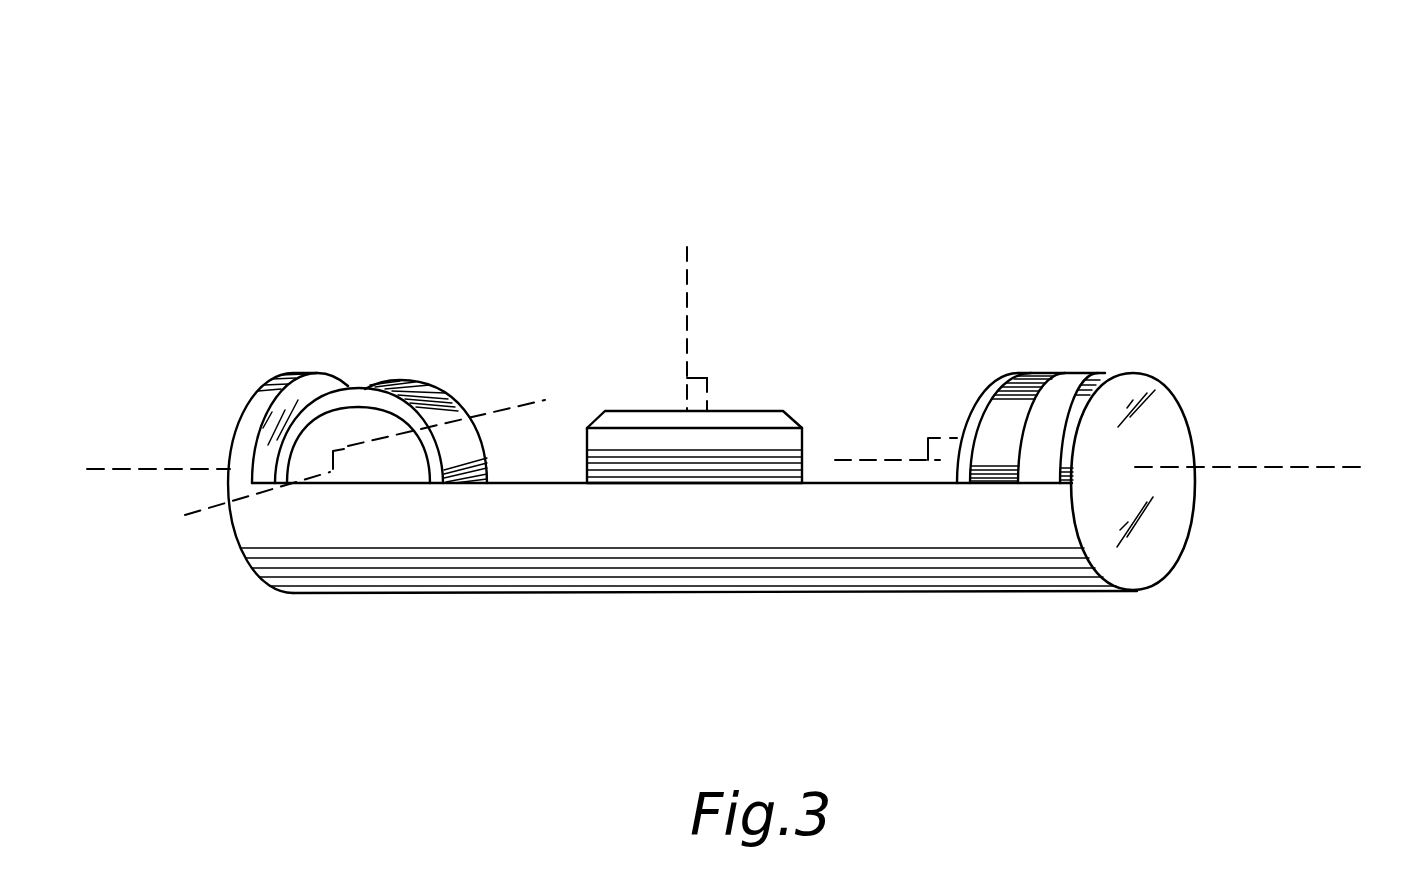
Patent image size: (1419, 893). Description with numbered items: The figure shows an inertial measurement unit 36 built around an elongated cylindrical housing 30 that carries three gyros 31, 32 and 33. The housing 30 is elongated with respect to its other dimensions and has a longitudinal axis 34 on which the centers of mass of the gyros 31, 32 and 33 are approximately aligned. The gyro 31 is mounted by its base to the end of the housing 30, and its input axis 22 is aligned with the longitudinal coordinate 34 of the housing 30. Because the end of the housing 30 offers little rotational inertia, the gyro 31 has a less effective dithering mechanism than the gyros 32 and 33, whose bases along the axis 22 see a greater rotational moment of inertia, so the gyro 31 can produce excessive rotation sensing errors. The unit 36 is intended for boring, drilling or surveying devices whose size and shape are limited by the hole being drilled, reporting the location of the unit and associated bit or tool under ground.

The input axis 22 is at (687, 293).
The cylindrical housing 30 is at (1180, 410).
The gyro 31 is at (1045, 372).
The gyro 32 is at (798, 418).
The gyro 33 is at (412, 382).
The longitudinal axis 34 is at (1292, 465).
The inertial measurement unit 36 is at (1000, 180).